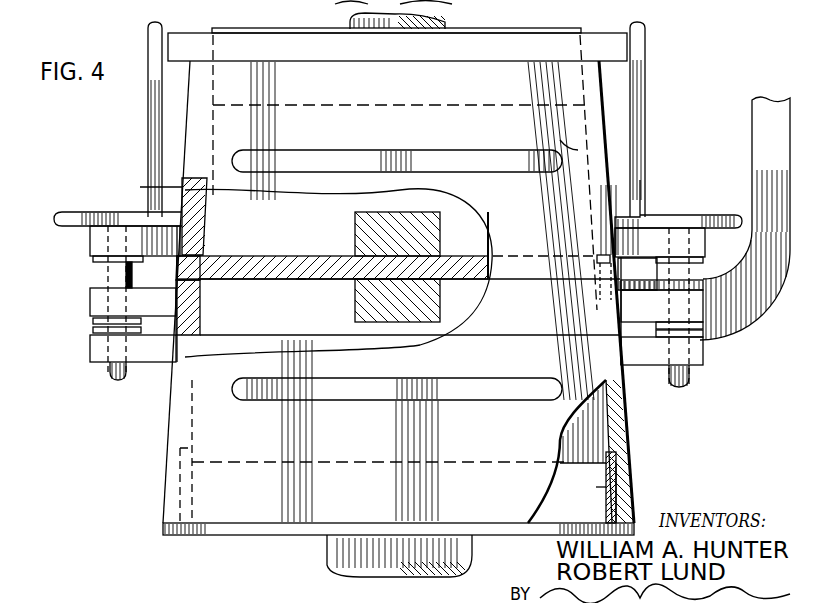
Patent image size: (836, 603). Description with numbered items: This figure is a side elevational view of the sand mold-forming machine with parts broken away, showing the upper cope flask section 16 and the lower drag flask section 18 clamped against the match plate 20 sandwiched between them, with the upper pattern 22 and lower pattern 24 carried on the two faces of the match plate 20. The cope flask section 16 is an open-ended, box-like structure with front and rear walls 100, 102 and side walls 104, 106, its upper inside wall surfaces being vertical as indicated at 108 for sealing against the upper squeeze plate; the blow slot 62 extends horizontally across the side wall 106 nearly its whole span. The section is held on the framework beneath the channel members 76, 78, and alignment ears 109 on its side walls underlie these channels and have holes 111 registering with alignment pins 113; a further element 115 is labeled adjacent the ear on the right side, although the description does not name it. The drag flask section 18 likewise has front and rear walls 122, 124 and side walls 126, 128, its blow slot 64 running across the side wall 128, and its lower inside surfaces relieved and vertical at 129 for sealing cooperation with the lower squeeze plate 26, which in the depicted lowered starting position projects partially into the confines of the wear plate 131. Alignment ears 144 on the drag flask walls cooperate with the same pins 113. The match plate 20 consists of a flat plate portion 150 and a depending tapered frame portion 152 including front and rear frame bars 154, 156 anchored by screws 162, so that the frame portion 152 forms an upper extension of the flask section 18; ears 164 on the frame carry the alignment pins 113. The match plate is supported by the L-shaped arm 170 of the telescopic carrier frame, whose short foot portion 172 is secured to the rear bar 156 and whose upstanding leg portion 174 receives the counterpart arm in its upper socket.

The upper cope flask section 16 is at (529, 218).
The lower drag flask section 18 is at (515, 455).
The match plate 20 is at (563, 311).
The upper pattern 22 is at (423, 221).
The lower pattern 24 is at (356, 310).
The lower squeeze plate 26 is at (630, 484).
The blow slot 62 is at (468, 158).
The blow slot 64 is at (498, 388).
The channel member 76 is at (152, 107).
The channel member 78 is at (640, 82).
The front wall 100 is at (205, 218).
The rear wall 102 is at (590, 172).
The side wall 104 is at (183, 191).
The side wall 106 is at (576, 150).
The vertical inside wall surfaces 108 is at (212, 80).
The alignment ears 109 is at (650, 232).
The holes 111 is at (683, 244).
The alignment pins 113 is at (112, 378).
The ear 115 is at (680, 226).
The front wall 122 is at (170, 422).
The rear wall 124 is at (622, 505).
The side wall 126 is at (624, 418).
The side wall 128 is at (626, 437).
The relieved vertical inside wall surfaces 129 is at (620, 465).
The wear plate 131 is at (607, 507).
The alignment ears 144 is at (92, 342).
The plate portion 150 is at (271, 257).
The frame portion 152 is at (300, 274).
The front frame bar 154 is at (197, 306).
The rear frame bar 156 is at (465, 308).
The screws 162 is at (210, 258).
The ears 164 is at (90, 300).
The L-shaped arm 170 is at (787, 275).
The short foot portion 172 is at (636, 287).
The upstanding leg portion 174 is at (762, 148).